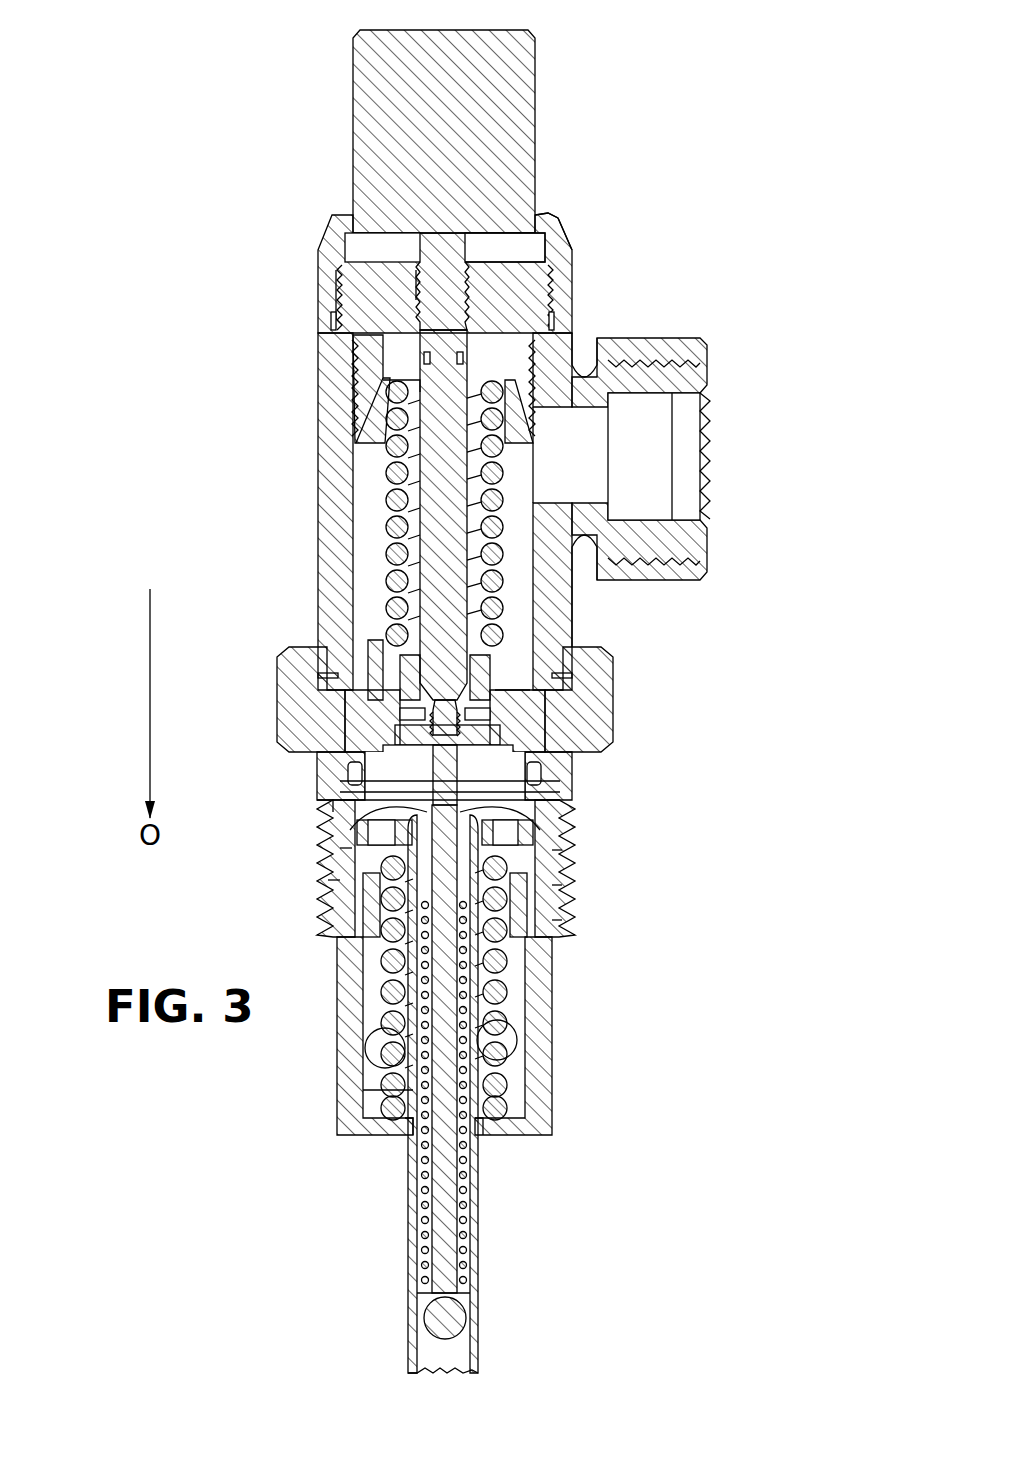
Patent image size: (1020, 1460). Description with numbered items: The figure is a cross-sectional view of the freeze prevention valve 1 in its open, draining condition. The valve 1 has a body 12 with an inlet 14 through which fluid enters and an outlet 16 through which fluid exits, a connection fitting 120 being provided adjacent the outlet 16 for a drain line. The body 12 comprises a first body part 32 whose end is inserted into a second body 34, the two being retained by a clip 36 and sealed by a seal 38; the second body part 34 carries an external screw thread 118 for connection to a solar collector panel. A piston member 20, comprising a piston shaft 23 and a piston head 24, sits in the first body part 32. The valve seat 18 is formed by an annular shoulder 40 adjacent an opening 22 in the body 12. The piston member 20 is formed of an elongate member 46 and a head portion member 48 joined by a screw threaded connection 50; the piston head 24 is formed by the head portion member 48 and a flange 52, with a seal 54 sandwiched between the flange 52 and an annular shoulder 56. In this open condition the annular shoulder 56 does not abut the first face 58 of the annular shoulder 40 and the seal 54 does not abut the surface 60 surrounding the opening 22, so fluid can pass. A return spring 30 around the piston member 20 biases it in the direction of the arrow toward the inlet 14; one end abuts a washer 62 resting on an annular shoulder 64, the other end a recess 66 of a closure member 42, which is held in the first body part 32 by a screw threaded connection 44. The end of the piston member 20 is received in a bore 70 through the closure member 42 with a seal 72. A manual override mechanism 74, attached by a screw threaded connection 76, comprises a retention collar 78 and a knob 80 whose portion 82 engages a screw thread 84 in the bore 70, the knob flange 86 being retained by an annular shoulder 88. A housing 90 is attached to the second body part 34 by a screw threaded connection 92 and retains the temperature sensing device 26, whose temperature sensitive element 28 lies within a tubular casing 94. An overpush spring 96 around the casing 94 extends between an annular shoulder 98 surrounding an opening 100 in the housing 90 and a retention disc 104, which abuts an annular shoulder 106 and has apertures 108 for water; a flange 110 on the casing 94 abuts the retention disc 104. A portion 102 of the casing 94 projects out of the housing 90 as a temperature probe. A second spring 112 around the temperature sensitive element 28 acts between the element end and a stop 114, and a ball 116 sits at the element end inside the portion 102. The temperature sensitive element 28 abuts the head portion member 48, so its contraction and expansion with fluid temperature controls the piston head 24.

The valve 1 is at (226, 93).
The body 12 is at (316, 487).
The inlet 14 is at (372, 1048).
The outlet 16 is at (700, 448).
The valve seat 18 is at (538, 690).
The piston member 20 is at (429, 560).
The opening 22 is at (490, 712).
The piston shaft 23 is at (386, 455).
The piston head 24 is at (548, 797).
The temperature sensing device 26 is at (505, 978).
The temperature sensitive element 28 is at (400, 1075).
The return spring 30 is at (386, 523).
The first body part 32 is at (575, 590).
The second body part 34 is at (277, 688).
The clip 36 is at (318, 675).
The seal 38 is at (348, 772).
The annular shoulder 40 is at (380, 710).
The closure member 42 is at (520, 280).
The screw threaded connection 44 is at (352, 395).
The elongate member 46 is at (495, 455).
The head portion member 48 is at (533, 826).
The screw threaded connection 50 is at (446, 700).
The flange 52 is at (500, 730).
The seal 54 is at (513, 745).
The annular shoulder 56 is at (532, 775).
The first face 58 is at (345, 740).
The surface 60 is at (400, 683).
The washer 62 is at (376, 660).
The annular shoulder 64 is at (500, 690).
The recess 66 is at (395, 378).
The bore 70 is at (331, 324).
The seal 72 is at (512, 330).
The manual override mechanism 74 is at (338, 78).
The screw threaded connection 76 is at (338, 285).
The retention collar 78 is at (318, 238).
The knob 80 is at (429, 137).
The portion 82 is at (442, 262).
The screw thread 84 is at (412, 270).
The flange 86 is at (562, 225).
The annular shoulder 88 is at (548, 213).
The housing 90 is at (552, 1075).
The screw threaded connection 92 is at (328, 905).
The casing 94 is at (478, 1232).
The overpush spring 96 is at (365, 955).
The annular shoulder 98 is at (490, 1135).
The opening 100 is at (410, 1135).
The portion 102 is at (490, 1262).
The retention disc 104 is at (555, 850).
The annular shoulder 106 is at (340, 846).
The apertures 108 is at (555, 885).
The flange 110 is at (325, 808).
The second spring 112 is at (422, 1230).
The stop 114 is at (555, 920).
The ball 116 is at (432, 1338).
The screw thread 118 is at (328, 878).
The connection fitting 120 is at (680, 335).